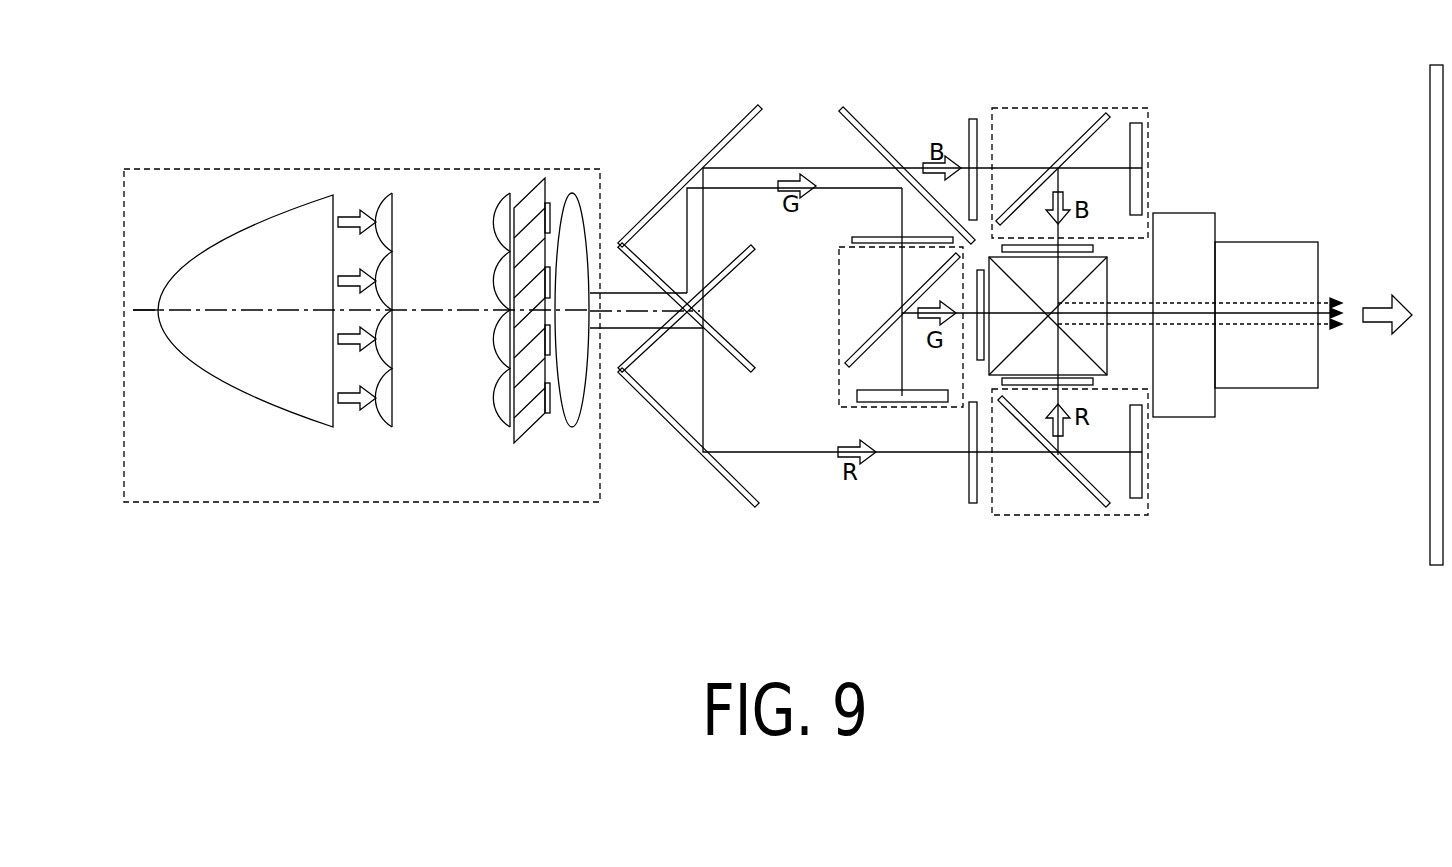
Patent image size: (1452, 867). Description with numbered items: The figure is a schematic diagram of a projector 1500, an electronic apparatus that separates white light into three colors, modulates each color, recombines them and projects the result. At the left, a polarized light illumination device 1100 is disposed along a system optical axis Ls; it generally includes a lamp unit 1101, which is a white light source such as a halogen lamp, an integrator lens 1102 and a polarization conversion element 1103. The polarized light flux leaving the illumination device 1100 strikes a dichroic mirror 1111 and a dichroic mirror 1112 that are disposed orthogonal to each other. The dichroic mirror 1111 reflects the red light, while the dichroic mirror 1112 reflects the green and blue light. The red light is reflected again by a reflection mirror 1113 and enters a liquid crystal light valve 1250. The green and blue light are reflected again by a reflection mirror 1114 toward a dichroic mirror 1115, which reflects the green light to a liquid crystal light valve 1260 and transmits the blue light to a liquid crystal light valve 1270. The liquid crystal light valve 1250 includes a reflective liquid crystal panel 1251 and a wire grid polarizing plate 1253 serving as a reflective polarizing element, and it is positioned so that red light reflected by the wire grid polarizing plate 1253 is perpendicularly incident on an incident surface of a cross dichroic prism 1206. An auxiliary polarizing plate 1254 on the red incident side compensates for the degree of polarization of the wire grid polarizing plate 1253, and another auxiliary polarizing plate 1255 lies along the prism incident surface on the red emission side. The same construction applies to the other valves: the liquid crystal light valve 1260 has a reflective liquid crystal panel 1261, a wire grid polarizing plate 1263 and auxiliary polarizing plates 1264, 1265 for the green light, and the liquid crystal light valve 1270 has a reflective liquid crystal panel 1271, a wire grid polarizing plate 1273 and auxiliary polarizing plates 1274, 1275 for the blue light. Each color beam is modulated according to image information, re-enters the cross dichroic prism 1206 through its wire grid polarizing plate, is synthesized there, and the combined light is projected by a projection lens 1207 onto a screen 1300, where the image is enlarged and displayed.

The projector 1500 is at (1340, 30).
The polarized light illumination device 1100 is at (372, 168).
The system optical axis Ls is at (136, 308).
The lamp unit 1101 is at (244, 402).
The integrator lens 1102 is at (388, 432).
The polarization conversion element 1103 is at (588, 444).
The dichroic mirror 1111 is at (738, 352).
The dichroic mirror 1112 is at (742, 262).
The reflection mirror 1113 is at (683, 438).
The reflection mirror 1114 is at (732, 127).
The dichroic mirror 1115 is at (870, 125).
The cross dichroic prism 1206 is at (1108, 290).
The projection lens 1207 is at (1308, 259).
The liquid crystal light valve 1250 is at (1013, 517).
The reflective liquid crystal panel 1251 is at (1144, 447).
The wire grid polarizing plate 1253 is at (1081, 480).
The auxiliary polarizing plate 1254 is at (968, 492).
The auxiliary polarizing plate 1255 is at (1096, 382).
The liquid crystal light valve 1260 is at (838, 254).
The reflective liquid crystal panel 1261 is at (856, 396).
The wire grid polarizing plate 1263 is at (871, 340).
The auxiliary polarizing plate 1264 is at (876, 236).
The auxiliary polarizing plate 1265 is at (976, 340).
The liquid crystal light valve 1270 is at (1021, 106).
The reflective liquid crystal panel 1271 is at (1144, 160).
The wire grid polarizing plate 1273 is at (1085, 130).
The auxiliary polarizing plate 1274 is at (968, 136).
The auxiliary polarizing plate 1275 is at (1096, 249).
The screen 1300 is at (1429, 493).